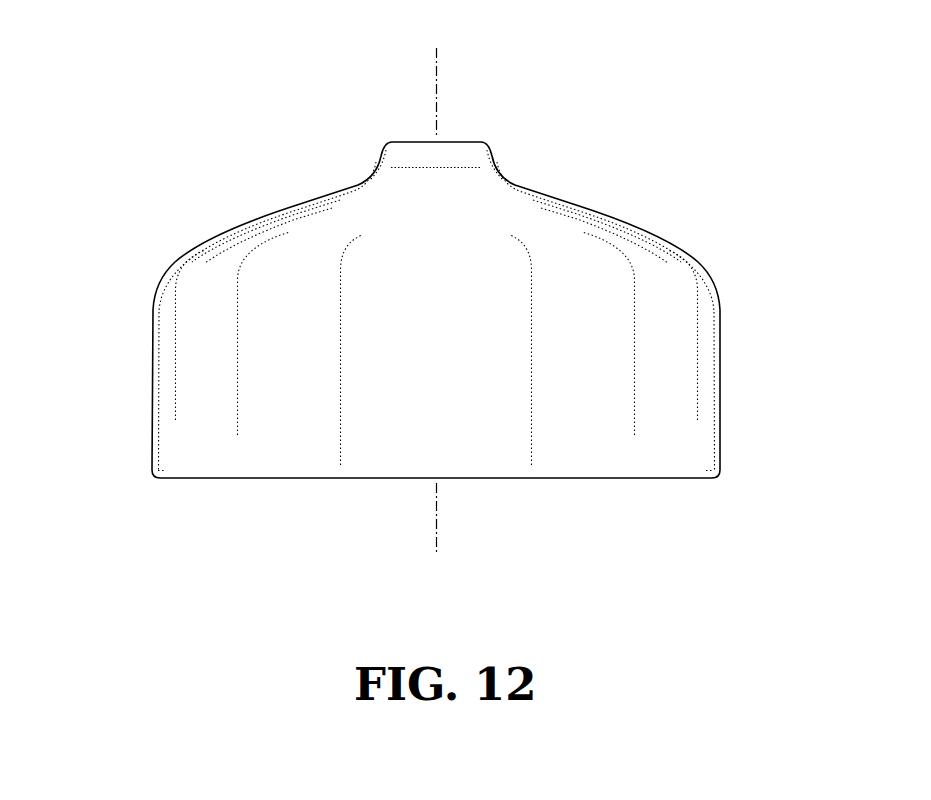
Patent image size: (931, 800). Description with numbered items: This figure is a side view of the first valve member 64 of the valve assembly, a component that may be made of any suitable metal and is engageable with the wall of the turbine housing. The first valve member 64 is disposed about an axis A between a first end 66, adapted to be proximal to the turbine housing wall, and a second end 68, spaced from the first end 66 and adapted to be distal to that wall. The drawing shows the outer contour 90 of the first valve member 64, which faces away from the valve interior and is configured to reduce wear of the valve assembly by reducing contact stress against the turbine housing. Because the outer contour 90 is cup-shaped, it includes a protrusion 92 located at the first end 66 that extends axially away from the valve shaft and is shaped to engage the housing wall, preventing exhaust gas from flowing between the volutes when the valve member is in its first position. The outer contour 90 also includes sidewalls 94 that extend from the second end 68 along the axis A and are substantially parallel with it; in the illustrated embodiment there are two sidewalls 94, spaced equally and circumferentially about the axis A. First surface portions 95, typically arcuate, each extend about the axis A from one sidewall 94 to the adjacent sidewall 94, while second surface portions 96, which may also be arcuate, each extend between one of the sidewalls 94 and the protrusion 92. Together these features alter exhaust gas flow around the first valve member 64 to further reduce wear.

The axis A is at (436, 86).
The first end 66 is at (392, 142).
The protrusion 92 is at (472, 157).
The second surface portions 96 is at (263, 213).
The sidewalls 94 is at (150, 398).
The second end 68 is at (245, 478).
The first valve member 64 is at (665, 453).
The outer contour 90 is at (198, 322).
The first surface portions 95 is at (487, 420).